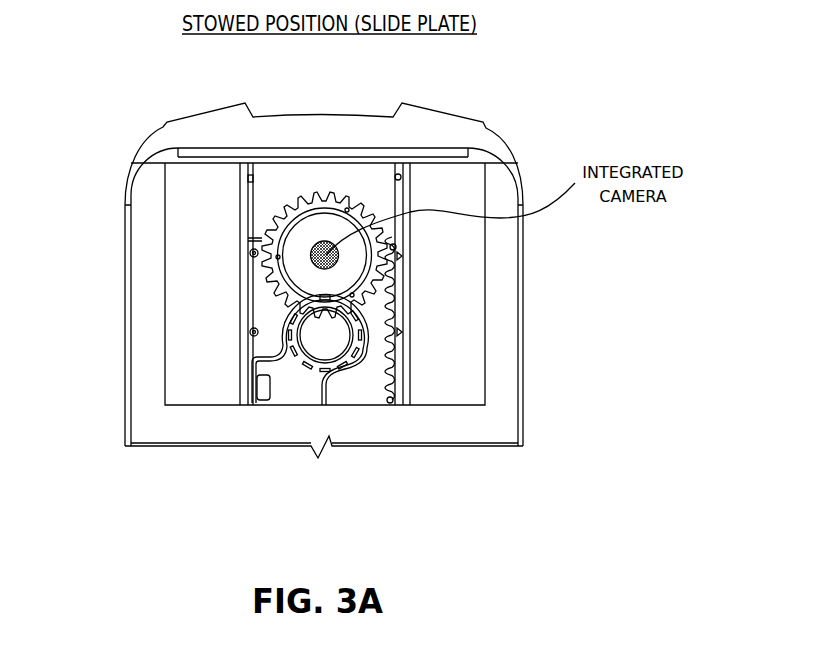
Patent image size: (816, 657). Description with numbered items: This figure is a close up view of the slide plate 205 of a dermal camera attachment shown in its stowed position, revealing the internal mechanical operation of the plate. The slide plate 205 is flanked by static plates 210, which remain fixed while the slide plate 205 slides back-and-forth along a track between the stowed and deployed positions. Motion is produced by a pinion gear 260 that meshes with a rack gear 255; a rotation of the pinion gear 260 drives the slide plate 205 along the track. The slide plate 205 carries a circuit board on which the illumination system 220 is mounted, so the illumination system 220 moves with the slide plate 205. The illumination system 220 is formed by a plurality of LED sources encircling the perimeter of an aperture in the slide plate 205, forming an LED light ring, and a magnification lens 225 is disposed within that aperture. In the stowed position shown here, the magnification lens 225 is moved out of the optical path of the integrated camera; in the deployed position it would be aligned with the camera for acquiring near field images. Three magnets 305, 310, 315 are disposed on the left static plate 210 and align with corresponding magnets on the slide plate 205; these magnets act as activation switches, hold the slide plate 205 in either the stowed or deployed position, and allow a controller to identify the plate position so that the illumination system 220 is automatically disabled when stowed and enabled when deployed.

The slide plate 205 is at (370, 400).
The static plates 210 is at (462, 203).
The illumination system 220 is at (295, 369).
The magnification lens 225 is at (338, 344).
The rack gear 255 is at (387, 368).
The pinion gear 260 is at (326, 206).
The magnet 305 is at (249, 175).
The magnet 310 is at (250, 253).
The magnet 315 is at (252, 332).